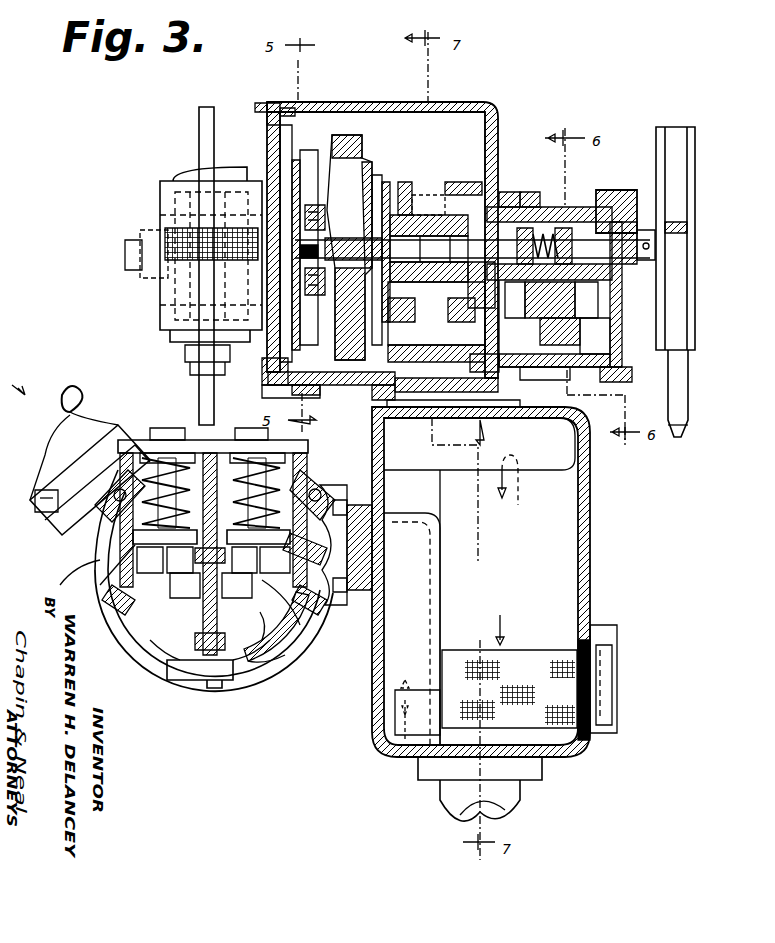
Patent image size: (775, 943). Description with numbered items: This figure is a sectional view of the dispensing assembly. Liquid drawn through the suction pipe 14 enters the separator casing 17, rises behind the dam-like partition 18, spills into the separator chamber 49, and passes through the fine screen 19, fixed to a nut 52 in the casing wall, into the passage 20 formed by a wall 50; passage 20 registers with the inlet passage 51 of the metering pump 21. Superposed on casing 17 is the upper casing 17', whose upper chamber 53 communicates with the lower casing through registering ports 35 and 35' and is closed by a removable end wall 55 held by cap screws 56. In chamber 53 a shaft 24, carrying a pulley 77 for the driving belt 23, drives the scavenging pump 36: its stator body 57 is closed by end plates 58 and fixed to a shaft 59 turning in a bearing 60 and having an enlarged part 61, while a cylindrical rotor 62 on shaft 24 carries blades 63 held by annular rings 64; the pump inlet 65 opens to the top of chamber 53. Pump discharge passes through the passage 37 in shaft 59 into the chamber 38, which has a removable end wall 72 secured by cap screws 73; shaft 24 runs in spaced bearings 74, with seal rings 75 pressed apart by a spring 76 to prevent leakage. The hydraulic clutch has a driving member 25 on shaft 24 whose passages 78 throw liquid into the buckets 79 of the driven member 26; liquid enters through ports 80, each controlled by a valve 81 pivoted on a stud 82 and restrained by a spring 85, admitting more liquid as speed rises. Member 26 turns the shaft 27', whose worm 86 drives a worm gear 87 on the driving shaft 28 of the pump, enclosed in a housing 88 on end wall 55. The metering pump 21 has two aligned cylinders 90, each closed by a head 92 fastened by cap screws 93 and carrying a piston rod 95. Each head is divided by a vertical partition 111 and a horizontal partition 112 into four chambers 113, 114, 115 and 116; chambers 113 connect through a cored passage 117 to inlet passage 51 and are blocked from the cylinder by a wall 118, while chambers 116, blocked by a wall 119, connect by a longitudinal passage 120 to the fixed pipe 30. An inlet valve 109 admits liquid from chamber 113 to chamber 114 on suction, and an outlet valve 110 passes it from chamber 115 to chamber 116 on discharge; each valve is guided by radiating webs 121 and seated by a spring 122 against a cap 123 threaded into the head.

The suction pipe 14 is at (447, 798).
The separator casing 17 is at (498, 582).
The upper casing 17' is at (390, 231).
The dam-like partition 18 is at (565, 500).
The fine screen 19 is at (562, 730).
The passage 20 is at (405, 725).
The metering pump 21 is at (159, 690).
The belt connection 23 is at (680, 440).
The shaft 24 is at (590, 238).
The driving member 25 is at (368, 172).
The driven member 26 is at (305, 145).
The motor 27' is at (193, 254).
The driving shaft 28 is at (205, 135).
The fixed pipe 30 is at (80, 405).
The port 35 is at (439, 490).
The port 35' is at (463, 465).
The scavenging pump 36 is at (498, 170).
The passage 37 is at (545, 372).
The chamber 38 is at (600, 343).
The separator chamber 49 is at (570, 612).
The wall 50 is at (442, 590).
The inlet passage 51 is at (386, 588).
The nut 52 is at (612, 660).
The upper chamber 53 is at (425, 120).
The end wall 55 is at (278, 148).
The cap screws 56 is at (270, 112).
The stator body 57 is at (403, 212).
The end plates 58 is at (392, 186).
The shaft 59 is at (500, 370).
The bearing 60 is at (430, 500).
The enlarged part 61 is at (578, 335).
The cylindrical rotor 62 is at (442, 202).
The blades 63 is at (506, 202).
The annular ring 64 is at (395, 305).
The pump inlet 65 is at (425, 200).
The removable end wall 72 is at (615, 320).
The cap screws 73 is at (625, 378).
The spaced bearings 74 is at (551, 300).
The seal rings 75 is at (550, 300).
The spring 76 is at (568, 224).
The pulley 77 is at (690, 283).
The passages 78 is at (315, 398).
The buckets 79 is at (347, 138).
The ports 80 is at (225, 365).
The valve 81 is at (340, 292).
The stud 82 is at (318, 218).
The spring 85 is at (280, 240).
The worm 86 is at (178, 218).
The worm gear 87 is at (165, 240).
The housing 88 is at (172, 275).
The cylinders 90 is at (292, 486).
The head 92 is at (310, 642).
The cap screws 93 is at (320, 615).
The rod 95 is at (200, 630).
The inlet valve 109 is at (385, 556).
The outlet valve 110 is at (140, 560).
The vertical partition 111 is at (250, 626).
The horizontal partition 112 is at (110, 580).
The chamber 113 is at (250, 662).
The chamber 114 is at (225, 500).
The chamber 115 is at (190, 682).
The chamber 116 is at (100, 478).
The cored passage 117 is at (290, 675).
The wall 118 is at (320, 655).
The wall 119 is at (270, 612).
The longitudinal passage 120 is at (120, 530).
The radiating webs 121 is at (150, 620).
The spring 122 is at (192, 442).
The cap 123 is at (165, 430).